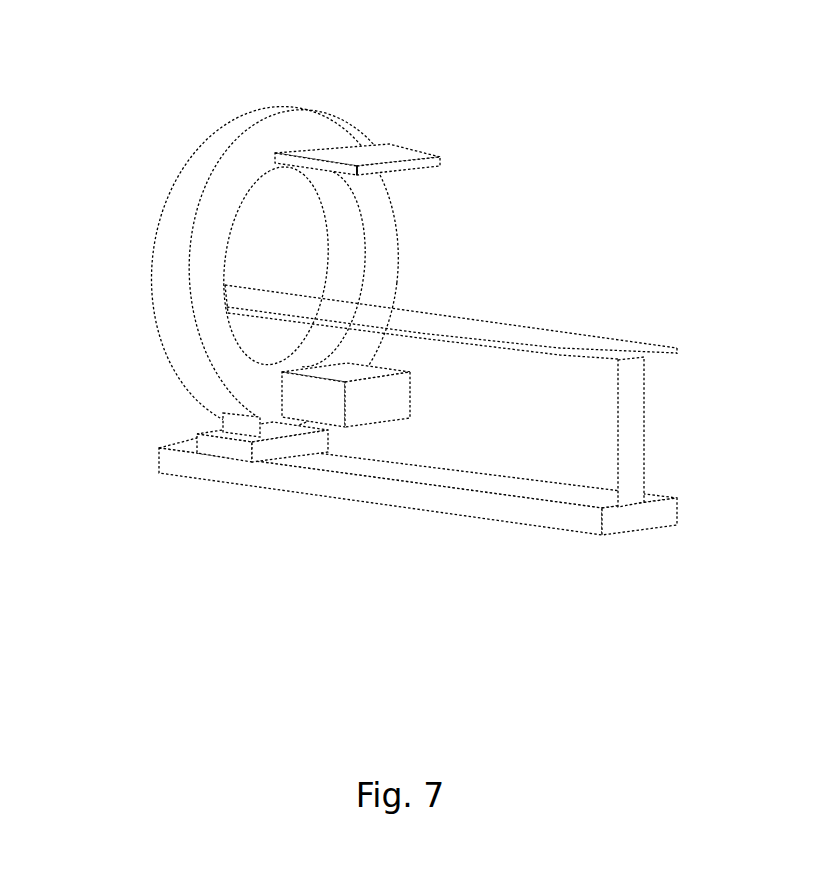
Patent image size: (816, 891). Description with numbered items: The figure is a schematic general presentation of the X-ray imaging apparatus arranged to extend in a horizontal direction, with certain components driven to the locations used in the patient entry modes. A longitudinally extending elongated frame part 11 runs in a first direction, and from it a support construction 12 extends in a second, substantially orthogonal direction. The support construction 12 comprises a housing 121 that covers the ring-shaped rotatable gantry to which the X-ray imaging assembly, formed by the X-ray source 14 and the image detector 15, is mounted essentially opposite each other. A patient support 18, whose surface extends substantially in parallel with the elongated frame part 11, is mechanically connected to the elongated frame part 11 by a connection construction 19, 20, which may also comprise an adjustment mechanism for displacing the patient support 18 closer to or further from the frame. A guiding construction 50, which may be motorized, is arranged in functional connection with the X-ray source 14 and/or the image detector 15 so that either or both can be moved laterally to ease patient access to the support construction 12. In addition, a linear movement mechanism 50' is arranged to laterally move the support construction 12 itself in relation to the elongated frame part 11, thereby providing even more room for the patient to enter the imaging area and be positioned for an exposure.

The elongated frame part 11 is at (545, 513).
The support construction 12 is at (140, 165).
The housing 121 is at (298, 137).
The X-ray source 14 is at (410, 408).
The image detector 15 is at (443, 158).
The patient support 18 is at (620, 342).
The connection construction 19 is at (204, 416).
The connection construction 20 is at (628, 426).
The guiding construction 50 is at (229, 238).
The linear movement mechanism 50' is at (231, 487).